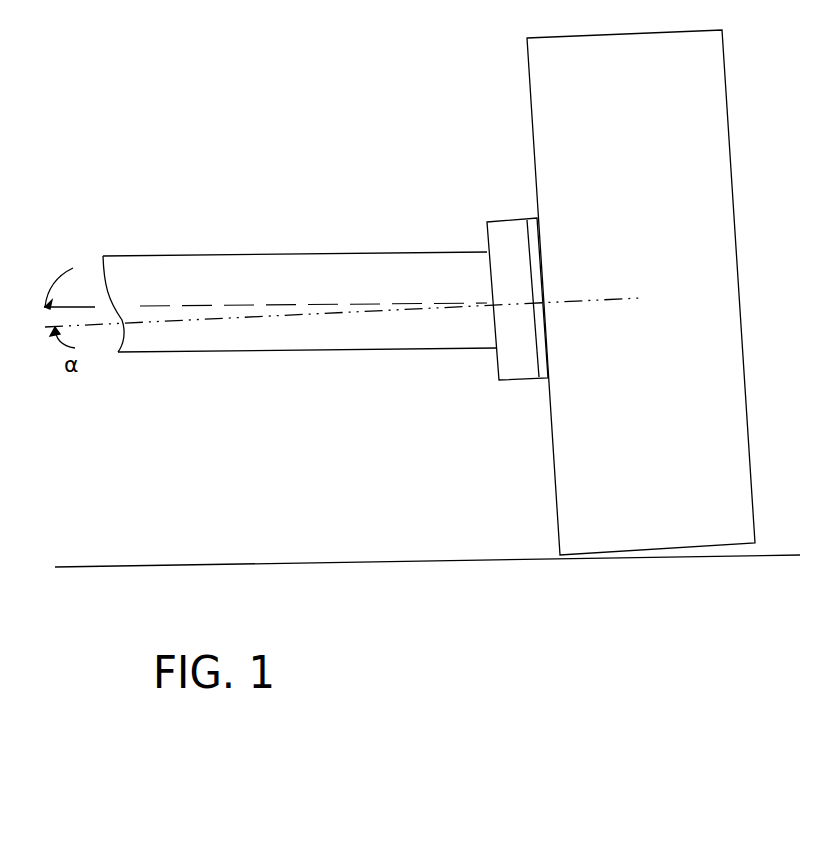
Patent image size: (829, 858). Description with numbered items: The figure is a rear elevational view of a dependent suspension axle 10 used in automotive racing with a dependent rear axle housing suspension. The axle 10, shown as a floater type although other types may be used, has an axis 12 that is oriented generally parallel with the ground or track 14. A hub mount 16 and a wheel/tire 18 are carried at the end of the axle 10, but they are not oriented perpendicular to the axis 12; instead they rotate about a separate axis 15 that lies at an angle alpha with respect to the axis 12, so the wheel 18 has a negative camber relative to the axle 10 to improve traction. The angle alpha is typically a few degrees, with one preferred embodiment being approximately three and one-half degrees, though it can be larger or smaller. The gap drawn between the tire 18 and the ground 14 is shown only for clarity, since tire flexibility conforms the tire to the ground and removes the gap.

The dependent suspension axle 10 is at (257, 280).
The axis 12 is at (199, 302).
The ground 14 is at (336, 593).
The axis 15 is at (182, 317).
The hub mount 16 is at (508, 251).
The wheel/tire 18 is at (577, 118).